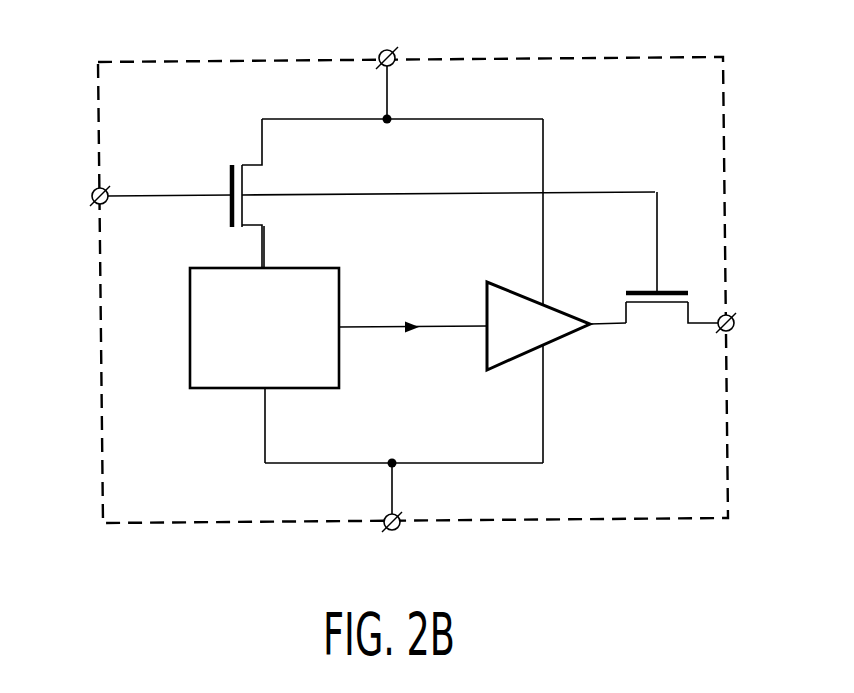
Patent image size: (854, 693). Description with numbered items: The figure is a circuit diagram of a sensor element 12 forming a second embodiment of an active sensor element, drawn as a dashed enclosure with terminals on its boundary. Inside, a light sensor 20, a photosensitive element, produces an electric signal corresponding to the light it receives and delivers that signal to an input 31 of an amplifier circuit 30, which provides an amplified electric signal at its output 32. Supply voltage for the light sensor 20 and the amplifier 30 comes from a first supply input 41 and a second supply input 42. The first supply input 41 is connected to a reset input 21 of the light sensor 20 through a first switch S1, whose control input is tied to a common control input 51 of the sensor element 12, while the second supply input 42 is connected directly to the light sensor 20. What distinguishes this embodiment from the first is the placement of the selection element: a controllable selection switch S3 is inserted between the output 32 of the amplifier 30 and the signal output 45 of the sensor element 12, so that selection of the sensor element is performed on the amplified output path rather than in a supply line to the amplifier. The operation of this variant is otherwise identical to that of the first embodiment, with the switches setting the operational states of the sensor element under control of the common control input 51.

The sensor element 12 is at (723, 98).
The first supply input 41 is at (380, 53).
The second supply input 42 is at (399, 528).
The signal output 45 is at (735, 322).
The common control input 51 is at (89, 194).
The first switch S1 is at (260, 180).
The controllable selection switch S3 is at (657, 323).
The reset input 21 is at (264, 267).
The light sensor 20 is at (274, 343).
The amplifier circuit 30 is at (529, 338).
The input of amplifier circuit 31 is at (486, 328).
The output of amplifier circuit 32 is at (593, 318).